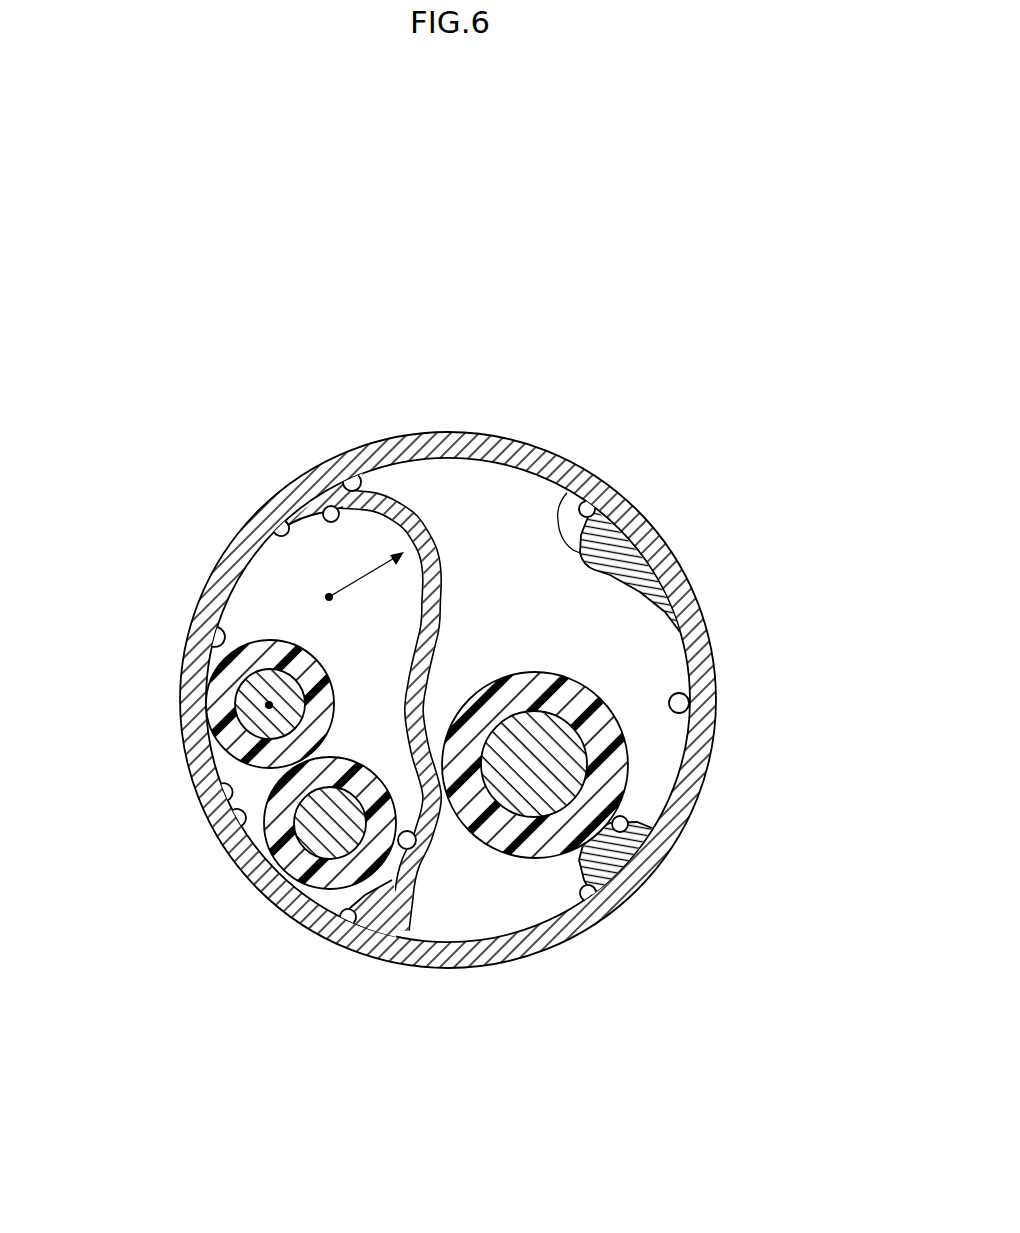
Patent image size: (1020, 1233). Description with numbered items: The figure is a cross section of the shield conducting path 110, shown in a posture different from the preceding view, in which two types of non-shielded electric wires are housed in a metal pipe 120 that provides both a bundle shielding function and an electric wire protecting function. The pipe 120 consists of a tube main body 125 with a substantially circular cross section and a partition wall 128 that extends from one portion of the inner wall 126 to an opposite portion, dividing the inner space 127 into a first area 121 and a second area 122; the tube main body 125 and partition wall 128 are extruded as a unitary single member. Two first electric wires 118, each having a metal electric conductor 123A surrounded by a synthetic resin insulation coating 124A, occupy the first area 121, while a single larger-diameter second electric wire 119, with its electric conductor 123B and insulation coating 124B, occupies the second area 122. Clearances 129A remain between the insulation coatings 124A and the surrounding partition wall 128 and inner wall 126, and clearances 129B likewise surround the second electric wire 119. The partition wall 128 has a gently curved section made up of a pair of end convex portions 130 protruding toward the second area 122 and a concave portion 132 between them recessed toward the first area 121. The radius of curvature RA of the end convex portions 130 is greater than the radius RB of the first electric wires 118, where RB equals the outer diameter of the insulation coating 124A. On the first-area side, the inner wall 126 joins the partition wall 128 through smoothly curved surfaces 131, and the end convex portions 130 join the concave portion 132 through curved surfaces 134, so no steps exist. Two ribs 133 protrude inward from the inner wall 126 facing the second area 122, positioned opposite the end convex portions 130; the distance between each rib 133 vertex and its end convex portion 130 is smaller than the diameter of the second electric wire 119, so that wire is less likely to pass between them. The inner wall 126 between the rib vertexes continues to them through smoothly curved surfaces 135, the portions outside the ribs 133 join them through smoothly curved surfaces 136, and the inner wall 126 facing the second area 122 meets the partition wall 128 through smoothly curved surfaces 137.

The shield conducting path 110 is at (513, 438).
The first electric wire 118 is at (228, 812).
The second electric wire 119 is at (630, 703).
The pipe 120 is at (541, 458).
The first area 121 is at (268, 580).
The second area 122 is at (498, 917).
The electric conductor 123A is at (262, 722).
The electric conductor 123B is at (557, 789).
The insulation coating 124A is at (216, 718).
The insulation coating 124B is at (612, 748).
The tube main body 125 is at (705, 668).
The inner wall 126 is at (212, 808).
The inner space 127 is at (273, 581).
The partition wall 128 is at (421, 855).
The clearance 129A is at (211, 629).
The clearance 129B is at (633, 826).
The end convex portion 130 is at (405, 511).
The smoothly curved surface 131 is at (320, 508).
The concave portion 132 is at (425, 705).
The rib 133 is at (567, 493).
The curved surface 134 is at (407, 670).
The smoothly curved surface 135 is at (690, 714).
The smoothly curved surface 136 is at (602, 490).
The smoothly curved surface 137 is at (359, 474).
The radius of curvature RA is at (326, 594).
The radius RB is at (268, 705).